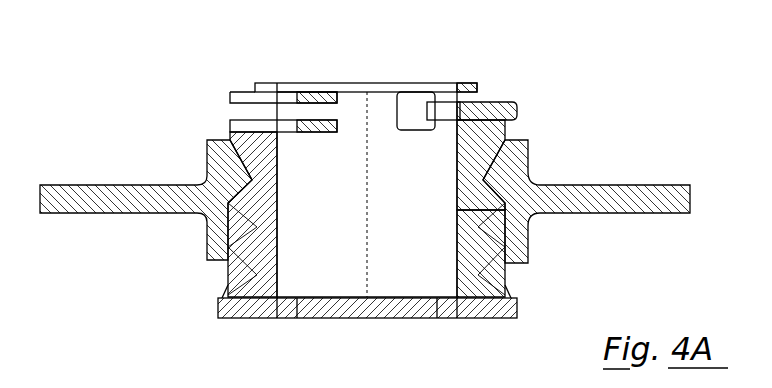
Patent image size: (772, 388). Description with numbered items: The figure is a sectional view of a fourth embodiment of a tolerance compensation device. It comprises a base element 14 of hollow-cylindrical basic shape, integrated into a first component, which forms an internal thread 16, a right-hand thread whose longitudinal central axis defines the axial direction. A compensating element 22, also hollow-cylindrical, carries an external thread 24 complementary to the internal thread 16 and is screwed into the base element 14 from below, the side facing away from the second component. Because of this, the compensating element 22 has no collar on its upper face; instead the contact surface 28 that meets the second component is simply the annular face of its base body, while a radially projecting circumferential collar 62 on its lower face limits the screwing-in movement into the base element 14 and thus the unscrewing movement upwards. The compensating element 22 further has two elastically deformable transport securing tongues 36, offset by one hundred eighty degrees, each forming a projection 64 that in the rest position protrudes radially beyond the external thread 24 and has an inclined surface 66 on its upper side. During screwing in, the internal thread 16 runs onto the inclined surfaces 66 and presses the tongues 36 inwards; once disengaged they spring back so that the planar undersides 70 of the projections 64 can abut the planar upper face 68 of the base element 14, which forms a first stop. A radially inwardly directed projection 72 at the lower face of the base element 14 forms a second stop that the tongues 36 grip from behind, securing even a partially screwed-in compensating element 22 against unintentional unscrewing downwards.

The base element 14 is at (207, 247).
The internal thread 16 is at (522, 174).
The compensating element 22 is at (270, 318).
The external thread 24 is at (497, 262).
The contact surface 28 is at (345, 82).
The transport securing tongue 36 is at (245, 110).
The circumferential collar 62 is at (218, 305).
The projection 64 is at (490, 100).
The inclined surface 66 is at (517, 106).
The upper face 68 is at (520, 135).
The underside 70 is at (240, 126).
The radially inwardly directed projection 72 is at (503, 257).